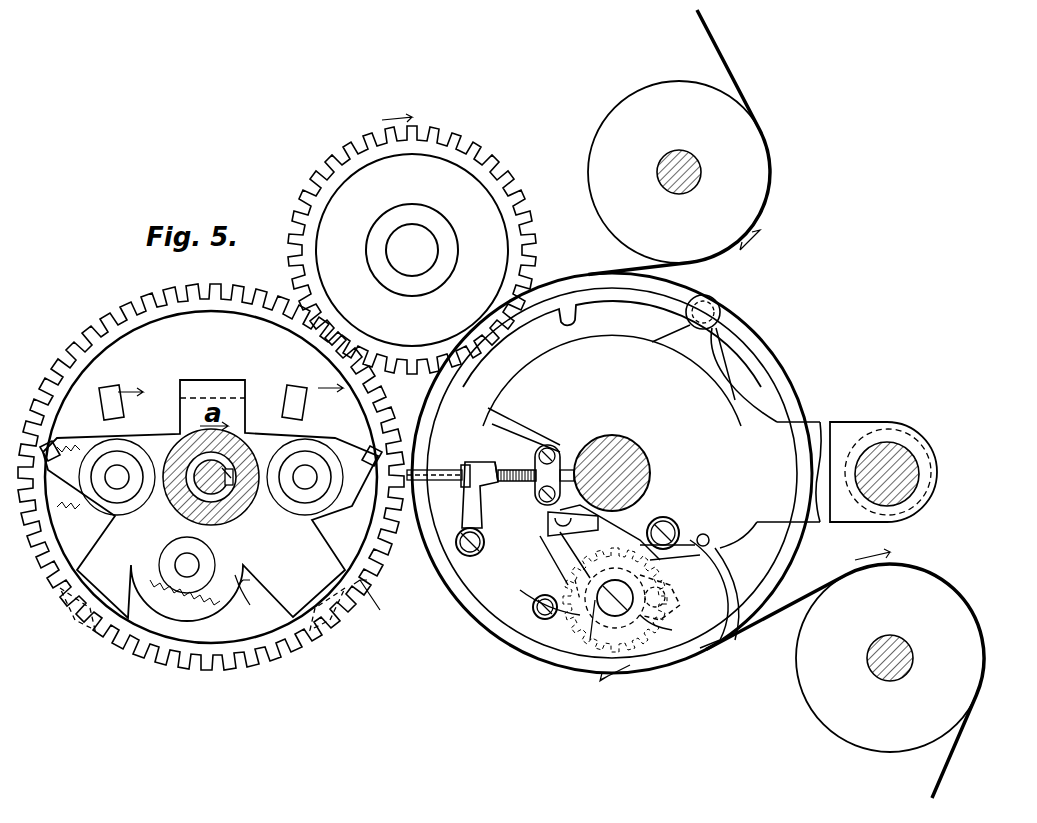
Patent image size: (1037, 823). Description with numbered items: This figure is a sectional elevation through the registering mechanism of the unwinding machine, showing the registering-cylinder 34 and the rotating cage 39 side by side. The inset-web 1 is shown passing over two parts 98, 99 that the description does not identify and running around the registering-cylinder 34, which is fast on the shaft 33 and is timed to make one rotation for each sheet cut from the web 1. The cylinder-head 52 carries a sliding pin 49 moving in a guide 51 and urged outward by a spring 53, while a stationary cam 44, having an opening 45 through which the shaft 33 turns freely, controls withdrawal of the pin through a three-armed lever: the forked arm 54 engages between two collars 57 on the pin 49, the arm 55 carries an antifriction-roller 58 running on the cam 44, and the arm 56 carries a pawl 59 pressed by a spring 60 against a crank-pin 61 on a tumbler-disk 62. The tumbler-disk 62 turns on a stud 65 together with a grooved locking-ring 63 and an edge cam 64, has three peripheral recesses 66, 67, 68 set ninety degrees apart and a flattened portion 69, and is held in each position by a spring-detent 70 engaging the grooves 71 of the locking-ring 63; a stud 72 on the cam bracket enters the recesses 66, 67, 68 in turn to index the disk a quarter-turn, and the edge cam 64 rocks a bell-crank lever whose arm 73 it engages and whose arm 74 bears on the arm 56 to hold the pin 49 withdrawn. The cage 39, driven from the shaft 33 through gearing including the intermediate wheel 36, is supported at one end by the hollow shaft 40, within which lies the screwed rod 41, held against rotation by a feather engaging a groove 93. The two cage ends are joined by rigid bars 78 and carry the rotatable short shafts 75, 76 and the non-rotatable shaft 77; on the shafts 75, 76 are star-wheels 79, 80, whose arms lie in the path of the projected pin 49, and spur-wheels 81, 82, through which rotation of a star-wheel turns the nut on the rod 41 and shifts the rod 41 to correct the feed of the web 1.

The inset-web 1 is at (740, 100).
The shaft 33 is at (640, 450).
The registering-cylinder 34 is at (777, 375).
The intermediate wheel 36 is at (498, 178).
The body or cage 39 is at (210, 500).
The hollow shaft 40 is at (190, 495).
The screw-threaded rod 41 is at (228, 488).
The stationary cam 44 is at (524, 422).
The opening 45 is at (617, 435).
The sliding pin 49 is at (447, 470).
The guide 51 is at (520, 468).
The cylinder-head 52 is at (540, 315).
The spring 53 is at (545, 445).
The forked arm 54 is at (478, 505).
The second arm 55 is at (462, 555).
The pawl-carrying arm 56 is at (545, 570).
The collars 57 is at (496, 462).
The antifriction-roller 58 is at (538, 618).
The pawl 59 is at (582, 630).
The spring 60 is at (500, 580).
The crank-pin 61 is at (628, 585).
The tumbler-disk 62 is at (712, 625).
The locking-ring 63 is at (668, 635).
The edge cam 64 is at (648, 650).
The stud 65 is at (745, 625).
The peripheral recess 66 is at (548, 635).
The peripheral recess 67 is at (690, 560).
The peripheral recess 68 is at (567, 315).
The flattened portion 69 is at (592, 640).
The spring-detent 70 is at (606, 630).
The grooves 71 is at (690, 540).
The stud or abutment 72 is at (720, 312).
The bell-crank arm 73 is at (668, 597).
The bell-crank arm 74 is at (640, 530).
The short shaft 75 is at (310, 482).
The short shaft 76 is at (117, 470).
The short shaft 77 is at (185, 565).
The rigid bars 78 is at (211, 479).
The star-wheel 79 is at (300, 410).
The star-wheel 80 is at (110, 413).
The spur-wheel 81 is at (295, 410).
The spur-wheel 82 is at (122, 410).
The groove 93 is at (230, 470).
The roller 98 is at (978, 662).
The roller 99 is at (758, 152).